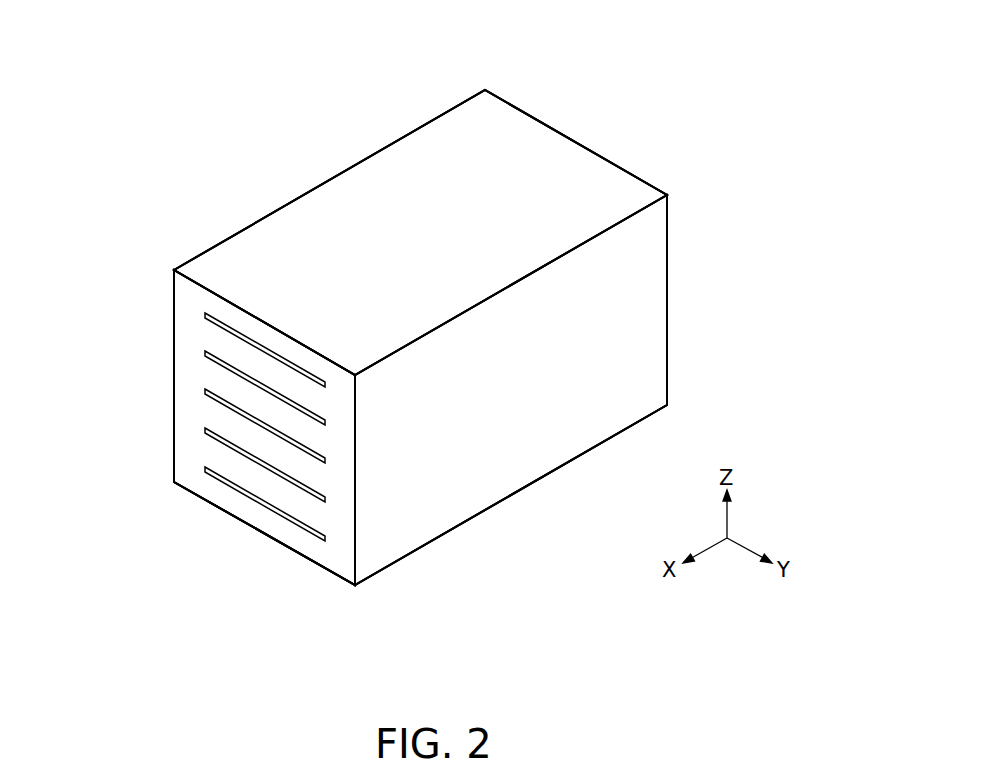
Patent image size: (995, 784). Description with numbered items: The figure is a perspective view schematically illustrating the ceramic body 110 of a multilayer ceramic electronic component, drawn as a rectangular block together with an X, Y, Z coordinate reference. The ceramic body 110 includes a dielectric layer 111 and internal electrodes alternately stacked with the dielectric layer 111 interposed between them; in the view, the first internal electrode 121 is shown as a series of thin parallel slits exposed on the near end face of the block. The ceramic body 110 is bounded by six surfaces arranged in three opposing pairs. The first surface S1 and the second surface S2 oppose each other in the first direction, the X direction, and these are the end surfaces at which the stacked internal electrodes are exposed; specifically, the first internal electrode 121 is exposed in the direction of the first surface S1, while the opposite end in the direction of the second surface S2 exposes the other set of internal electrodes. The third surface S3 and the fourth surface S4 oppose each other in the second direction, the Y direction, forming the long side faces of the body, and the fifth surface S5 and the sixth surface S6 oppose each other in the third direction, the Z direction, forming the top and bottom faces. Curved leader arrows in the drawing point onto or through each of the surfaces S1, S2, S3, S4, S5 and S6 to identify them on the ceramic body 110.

The ceramic body 110 is at (259, 40).
The dielectric layer 111 is at (184, 397).
The first internal electrode 121 is at (225, 367).
The first surface S1 is at (255, 472).
The second surface S2 is at (573, 172).
The third surface S3 is at (595, 398).
The fourth surface S4 is at (284, 237).
The fifth surface S5 is at (451, 150).
The sixth surface S6 is at (482, 482).